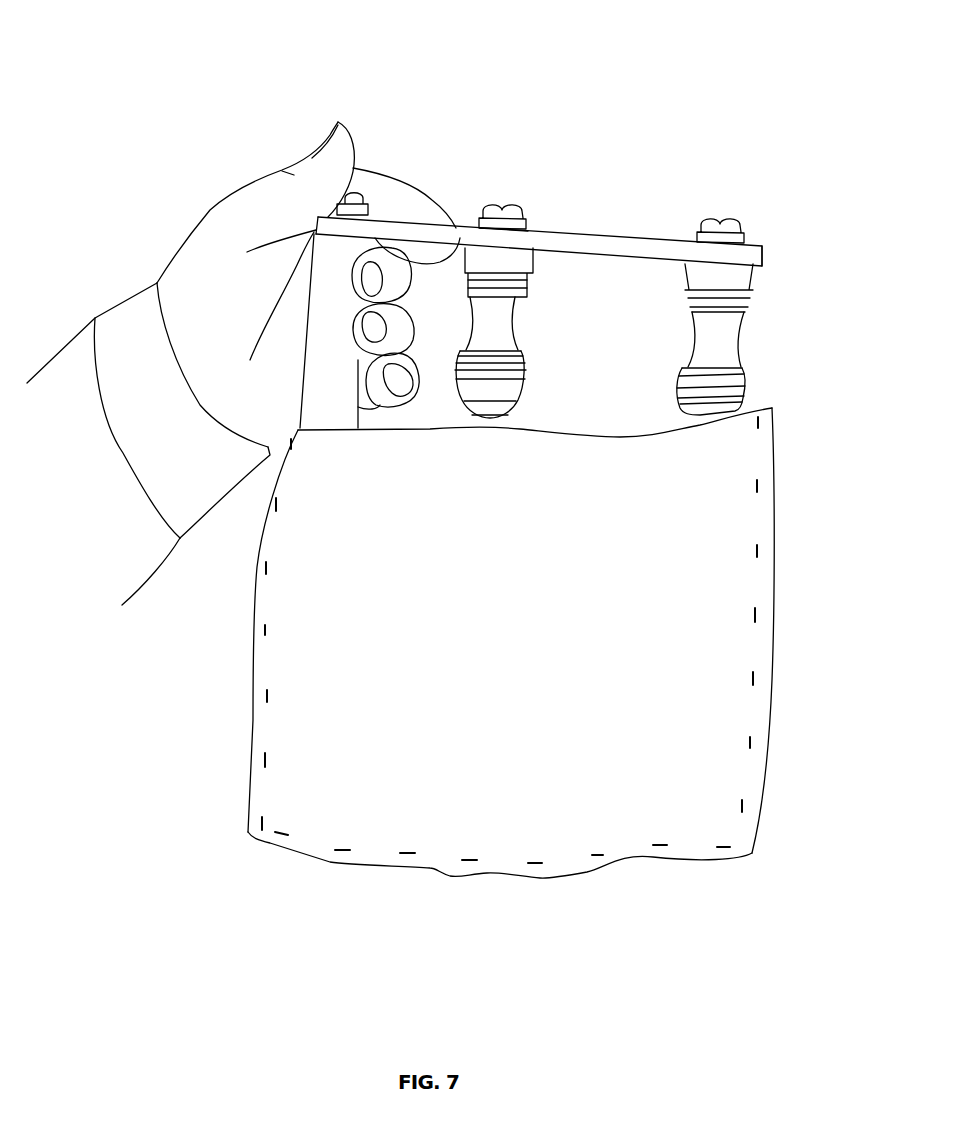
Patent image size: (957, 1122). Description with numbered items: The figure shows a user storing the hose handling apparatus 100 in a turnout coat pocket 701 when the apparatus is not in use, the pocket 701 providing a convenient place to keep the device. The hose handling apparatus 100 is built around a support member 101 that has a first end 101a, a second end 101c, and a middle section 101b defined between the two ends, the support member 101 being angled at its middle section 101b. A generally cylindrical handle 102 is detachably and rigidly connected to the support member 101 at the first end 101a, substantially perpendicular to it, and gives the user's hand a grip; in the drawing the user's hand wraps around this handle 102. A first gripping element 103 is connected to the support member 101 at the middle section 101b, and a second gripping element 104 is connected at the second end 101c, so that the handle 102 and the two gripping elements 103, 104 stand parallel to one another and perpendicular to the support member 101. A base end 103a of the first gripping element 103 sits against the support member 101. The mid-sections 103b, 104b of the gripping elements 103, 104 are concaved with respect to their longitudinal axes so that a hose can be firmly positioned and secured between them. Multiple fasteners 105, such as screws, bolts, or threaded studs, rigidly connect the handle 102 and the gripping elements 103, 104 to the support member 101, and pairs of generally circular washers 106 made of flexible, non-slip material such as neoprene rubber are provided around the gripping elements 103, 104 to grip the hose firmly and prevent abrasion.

The hose handling apparatus 100 is at (508, 301).
The support member 101 is at (554, 173).
The first end 101a is at (330, 219).
The middle section 101b is at (516, 229).
The second end 101c is at (771, 255).
The generally cylindrical handle 102 is at (315, 298).
The first generally cylindrical curvilinear gripping element 103 is at (393, 368).
The base end of first peg 103a is at (473, 427).
The mid-section of the first gripping element 103b is at (518, 328).
The second generally cylindrical curvilinear gripping element 104 is at (666, 300).
The mid-section of the second gripping element 104b is at (694, 338).
The fasteners 105 is at (718, 229).
The generally circular washers 106 is at (463, 347).
The turnout coat pocket 701 is at (250, 702).